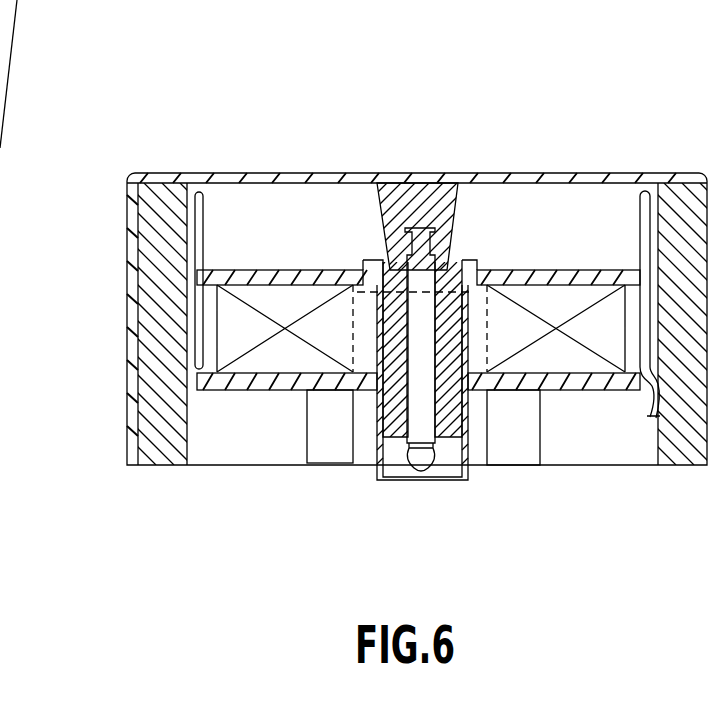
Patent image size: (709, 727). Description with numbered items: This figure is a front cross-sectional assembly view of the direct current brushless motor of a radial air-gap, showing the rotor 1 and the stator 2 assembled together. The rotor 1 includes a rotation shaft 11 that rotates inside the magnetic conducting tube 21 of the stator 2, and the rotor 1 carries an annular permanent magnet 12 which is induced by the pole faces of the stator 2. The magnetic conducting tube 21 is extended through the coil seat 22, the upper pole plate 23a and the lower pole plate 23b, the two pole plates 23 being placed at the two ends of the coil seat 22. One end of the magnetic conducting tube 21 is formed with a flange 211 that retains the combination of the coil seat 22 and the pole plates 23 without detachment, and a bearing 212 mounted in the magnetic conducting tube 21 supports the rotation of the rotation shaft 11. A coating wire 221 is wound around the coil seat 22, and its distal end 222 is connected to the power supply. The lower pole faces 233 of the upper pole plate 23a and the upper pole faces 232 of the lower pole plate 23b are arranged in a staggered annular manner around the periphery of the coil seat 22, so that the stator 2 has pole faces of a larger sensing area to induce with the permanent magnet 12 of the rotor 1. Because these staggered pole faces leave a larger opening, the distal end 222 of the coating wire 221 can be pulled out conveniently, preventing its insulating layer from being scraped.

The rotor 1 is at (354, 299).
The stator 2 is at (302, 486).
The rotation shaft 11 is at (430, 470).
The annular permanent magnet 12 is at (170, 447).
The magnetic conducting tube 21 is at (475, 440).
The flange 211 is at (487, 258).
The bearing 212 is at (395, 478).
The coil seat 22 is at (574, 324).
The coating wire 221 is at (607, 313).
The distal end 222 is at (640, 413).
The pole plate 23 is at (401, 317).
The upper pole plate 23a is at (250, 270).
The lower pole plate 23b is at (250, 392).
The upper pole faces 232 is at (208, 213).
The lower pole faces 233 is at (193, 332).